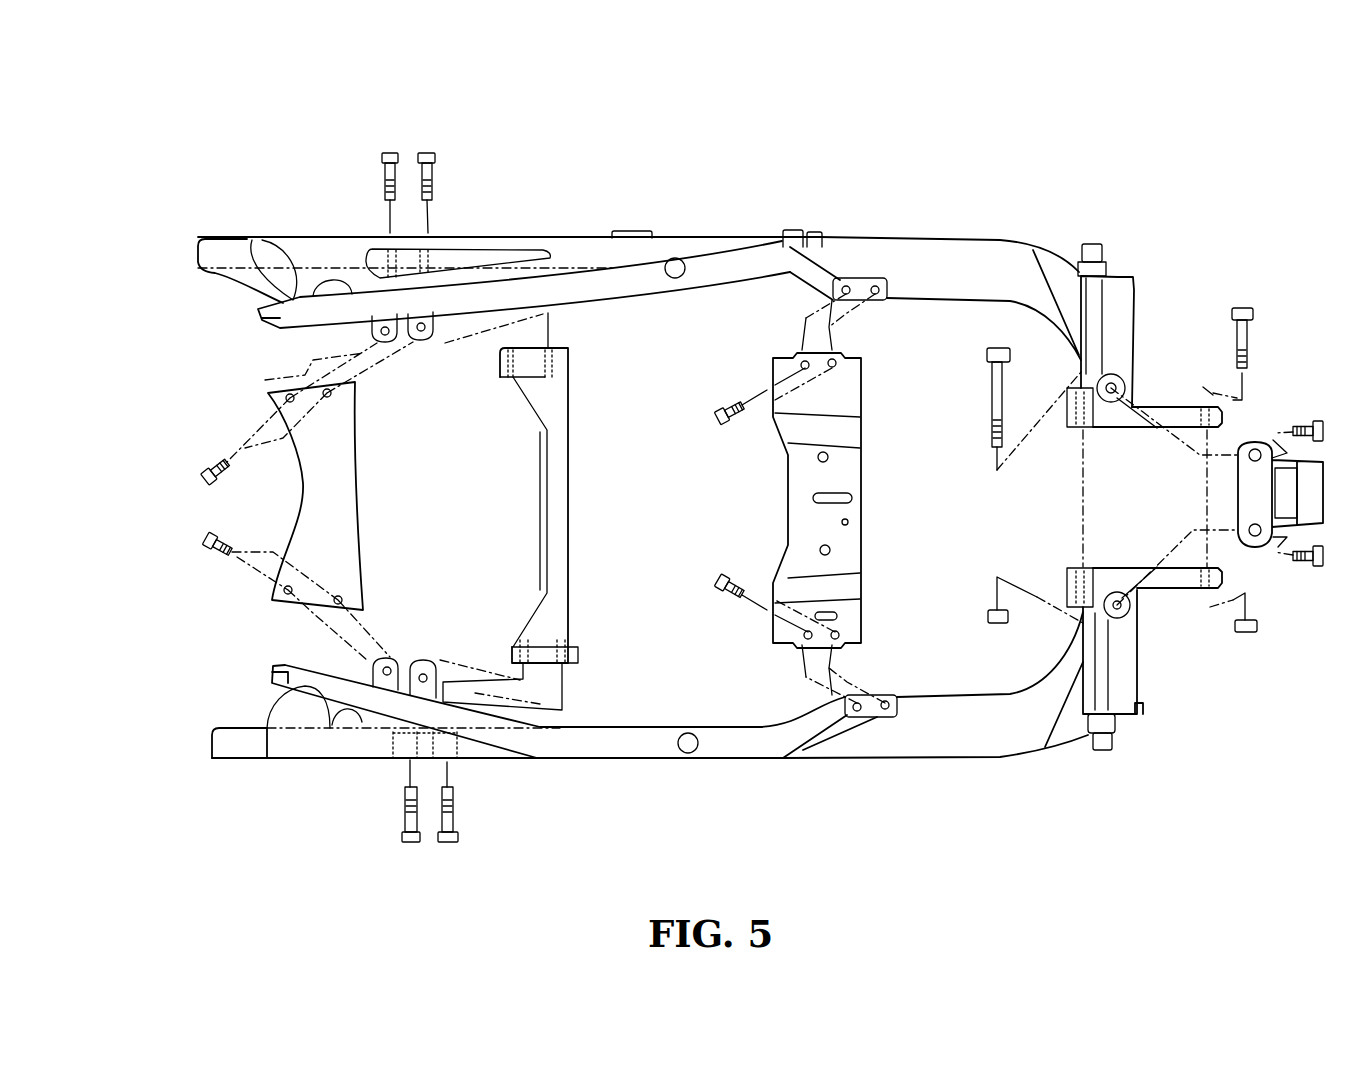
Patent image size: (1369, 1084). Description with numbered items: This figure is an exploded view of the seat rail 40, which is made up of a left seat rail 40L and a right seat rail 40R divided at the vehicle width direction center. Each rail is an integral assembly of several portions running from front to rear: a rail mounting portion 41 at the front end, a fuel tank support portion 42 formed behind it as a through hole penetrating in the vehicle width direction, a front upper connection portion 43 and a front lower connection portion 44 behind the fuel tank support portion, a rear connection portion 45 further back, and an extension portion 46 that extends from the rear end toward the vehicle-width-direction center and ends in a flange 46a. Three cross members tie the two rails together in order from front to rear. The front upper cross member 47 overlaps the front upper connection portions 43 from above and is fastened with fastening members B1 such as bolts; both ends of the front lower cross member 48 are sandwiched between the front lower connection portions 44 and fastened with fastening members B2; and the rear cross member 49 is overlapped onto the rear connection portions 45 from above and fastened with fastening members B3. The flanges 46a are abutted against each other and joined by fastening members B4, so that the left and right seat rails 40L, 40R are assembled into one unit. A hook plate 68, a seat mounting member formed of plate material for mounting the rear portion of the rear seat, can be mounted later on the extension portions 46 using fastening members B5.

The seat rail 40 is at (147, 195).
The right seat rail 40R is at (712, 236).
The left seat rail 40L is at (713, 770).
The rail mounting portion 41 is at (253, 313).
The fuel tank support portion 42 is at (320, 280).
The front upper connection portion 43 is at (388, 343).
The front lower connection portion 44 is at (437, 238).
The rear connection portion 45 is at (860, 283).
The extension portion 46 is at (1120, 315).
The flange 46a is at (1193, 407).
The front upper cross member 47 is at (337, 512).
The front lower cross member 48 is at (565, 512).
The rear cross member 49 is at (858, 513).
The hook plate 68 is at (1260, 548).
The fastening members B1 is at (200, 538).
The fastening members B2 is at (427, 152).
The fastening members B3 is at (720, 418).
The fastening members B4 is at (990, 398).
The fastening members B5 is at (1299, 427).